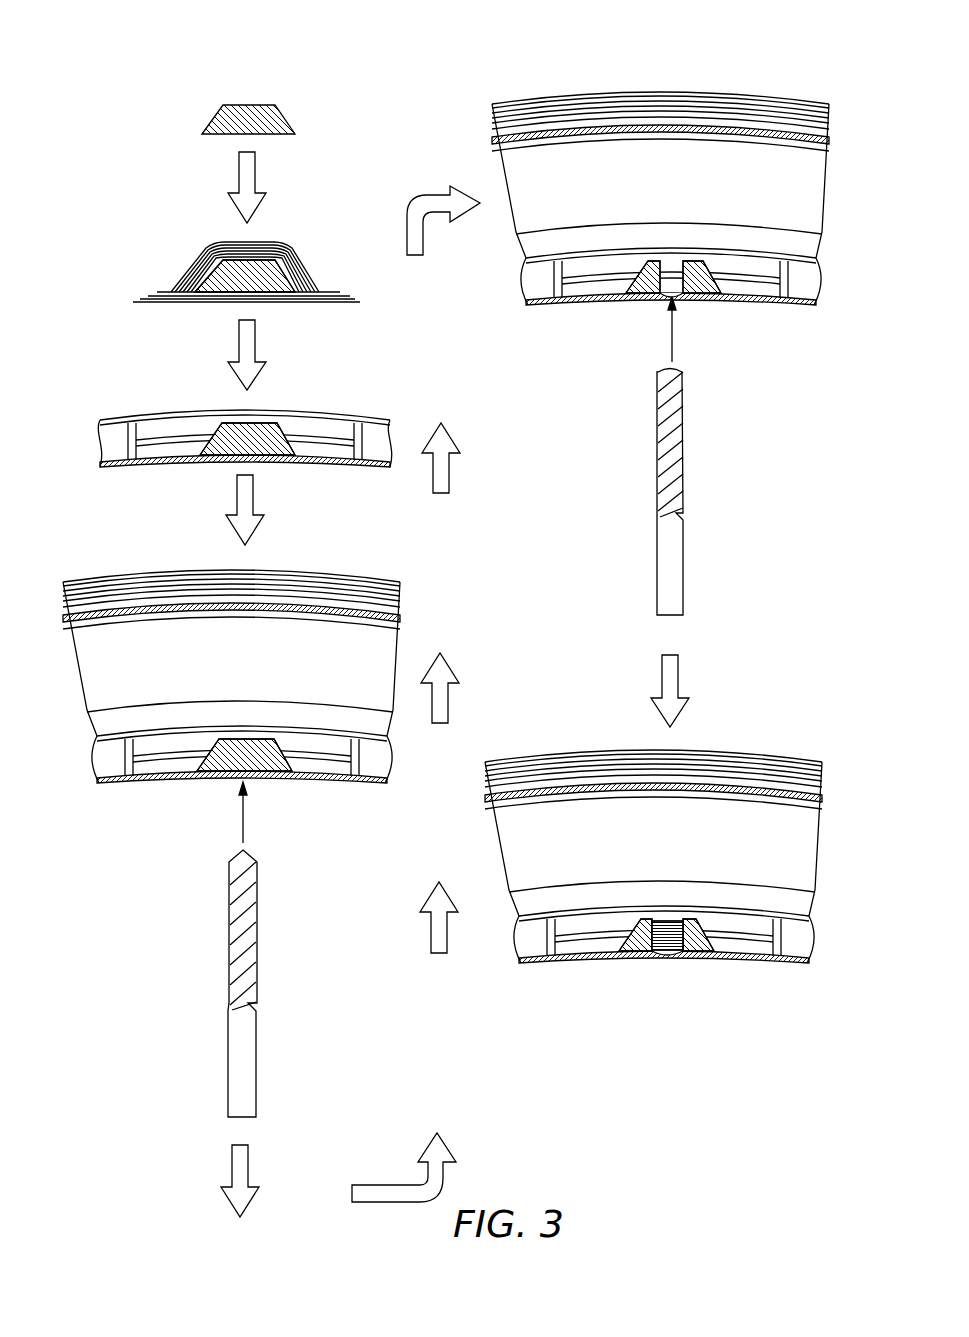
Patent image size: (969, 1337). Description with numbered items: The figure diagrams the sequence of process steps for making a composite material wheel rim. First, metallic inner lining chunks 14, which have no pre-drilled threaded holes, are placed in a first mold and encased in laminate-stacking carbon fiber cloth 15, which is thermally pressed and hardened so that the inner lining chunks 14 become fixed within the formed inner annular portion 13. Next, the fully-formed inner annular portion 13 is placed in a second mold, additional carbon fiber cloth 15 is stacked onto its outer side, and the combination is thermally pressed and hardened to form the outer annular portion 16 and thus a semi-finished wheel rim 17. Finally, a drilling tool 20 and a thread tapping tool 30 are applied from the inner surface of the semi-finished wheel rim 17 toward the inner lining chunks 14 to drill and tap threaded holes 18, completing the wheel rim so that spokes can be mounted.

The inner annular portion 13 is at (338, 437).
The inner lining chunk 14 is at (252, 122).
The carbon fiber cloth 15 is at (263, 252).
The outer annular portion 16 is at (367, 660).
The semi-finished wheel rim 17 is at (408, 593).
The threaded hole 18 is at (668, 935).
The drilling tool 20 is at (243, 1063).
The thread tapping tool 30 is at (670, 560).